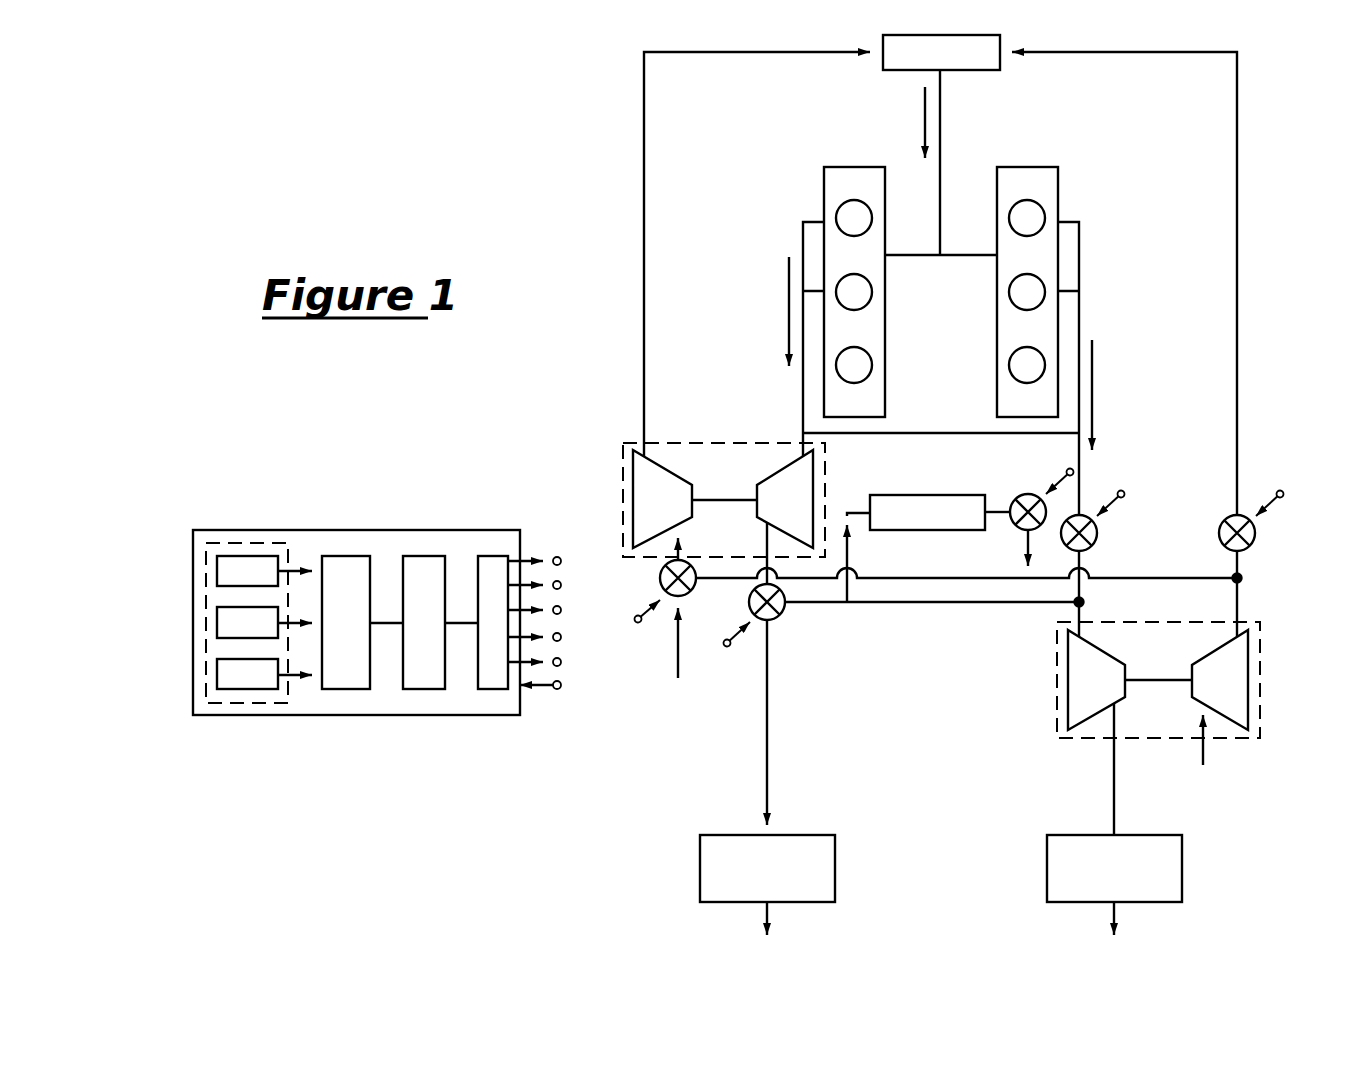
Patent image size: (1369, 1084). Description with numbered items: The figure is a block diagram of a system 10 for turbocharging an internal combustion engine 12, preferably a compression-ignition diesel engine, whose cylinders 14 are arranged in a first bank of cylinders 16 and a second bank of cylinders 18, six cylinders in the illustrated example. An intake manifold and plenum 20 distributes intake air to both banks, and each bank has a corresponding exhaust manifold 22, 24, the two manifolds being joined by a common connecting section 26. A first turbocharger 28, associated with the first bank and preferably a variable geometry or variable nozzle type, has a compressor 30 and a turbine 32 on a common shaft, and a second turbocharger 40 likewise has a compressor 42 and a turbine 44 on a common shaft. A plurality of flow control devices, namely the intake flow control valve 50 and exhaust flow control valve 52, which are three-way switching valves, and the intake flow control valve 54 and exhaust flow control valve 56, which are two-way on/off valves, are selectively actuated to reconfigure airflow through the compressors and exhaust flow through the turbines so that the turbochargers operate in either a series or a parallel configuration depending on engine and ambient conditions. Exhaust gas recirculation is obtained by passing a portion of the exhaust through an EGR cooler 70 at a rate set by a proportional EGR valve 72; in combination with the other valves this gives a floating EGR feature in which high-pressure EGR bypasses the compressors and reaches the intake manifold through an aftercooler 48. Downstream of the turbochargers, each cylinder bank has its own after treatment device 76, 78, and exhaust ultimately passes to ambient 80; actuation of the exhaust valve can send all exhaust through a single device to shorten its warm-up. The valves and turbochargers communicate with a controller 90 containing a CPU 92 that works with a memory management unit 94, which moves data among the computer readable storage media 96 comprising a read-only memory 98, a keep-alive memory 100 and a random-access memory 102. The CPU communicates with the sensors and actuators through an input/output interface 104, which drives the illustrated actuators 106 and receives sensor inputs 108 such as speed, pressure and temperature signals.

The system 10 is at (1262, 88).
The internal combustion engine 12 is at (948, 270).
The cylinders 14 is at (826, 210).
The first bank of cylinders 16 is at (855, 167).
The second bank of cylinders 18 is at (1027, 167).
The intake manifold and plenum 20 is at (962, 188).
The exhaust manifold 22 is at (803, 240).
The exhaust manifold 24 is at (1079, 258).
The common connecting section 26 is at (940, 433).
The first turbocharger 28 is at (727, 455).
The compressor 30 is at (633, 468).
The turbine 32 is at (815, 470).
The second turbocharger 40 is at (1167, 675).
The compressor 42 is at (1248, 680).
The turbine 44 is at (1068, 680).
The aftercooler 48 is at (1003, 72).
The intake flow control valve 50 is at (695, 571).
The exhaust flow control valve 52 is at (776, 618).
The intake flow control valve 54 is at (1255, 528).
The exhaust flow control valve 56 is at (1097, 528).
The EGR cooler 70 is at (915, 530).
The EGR valve 72 is at (1018, 527).
The after treatment device 76 is at (835, 868).
The after treatment device 78 is at (1182, 868).
The ambient 80 is at (1232, 810).
The controller 90 is at (360, 625).
The microprocessor (CPU) 92 is at (423, 556).
The memory management unit (MMU) 94 is at (345, 556).
The computer readable storage media 96 is at (285, 543).
The read-only memory (ROM) 98 is at (217, 572).
The keep-alive memory (KAM) 100 is at (217, 623).
The random-access memory (RAM) 102 is at (217, 675).
The input/output (I/O) interface 104 is at (490, 556).
The actuators 106 is at (587, 535).
The sensor inputs 108 is at (590, 710).